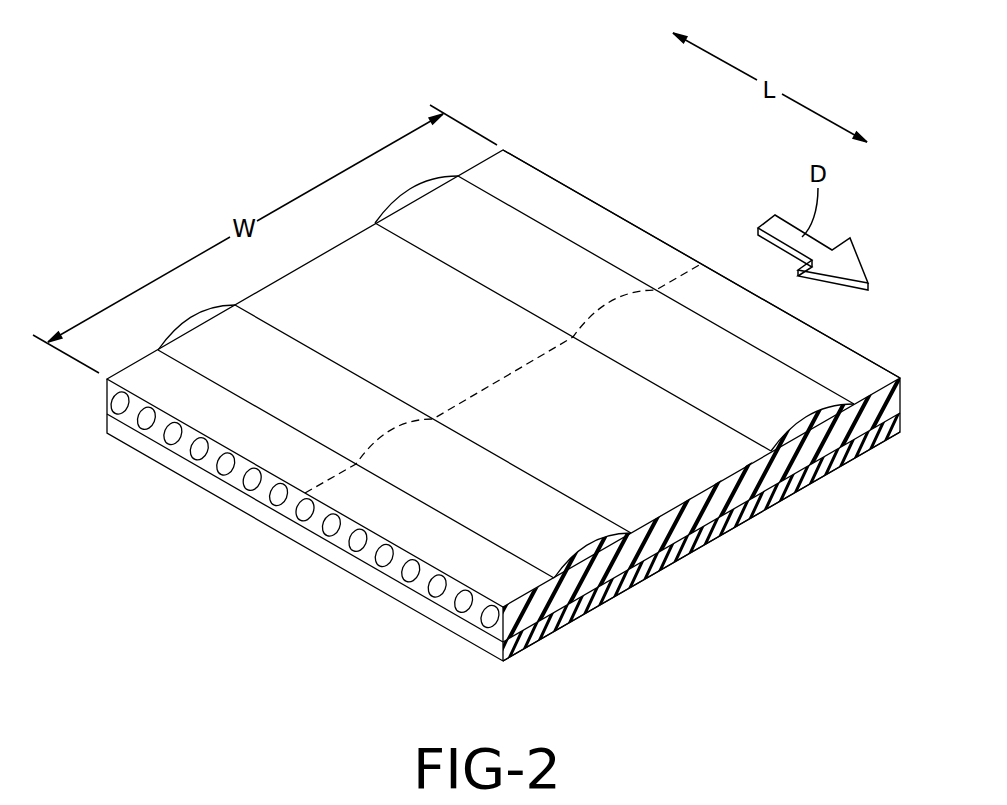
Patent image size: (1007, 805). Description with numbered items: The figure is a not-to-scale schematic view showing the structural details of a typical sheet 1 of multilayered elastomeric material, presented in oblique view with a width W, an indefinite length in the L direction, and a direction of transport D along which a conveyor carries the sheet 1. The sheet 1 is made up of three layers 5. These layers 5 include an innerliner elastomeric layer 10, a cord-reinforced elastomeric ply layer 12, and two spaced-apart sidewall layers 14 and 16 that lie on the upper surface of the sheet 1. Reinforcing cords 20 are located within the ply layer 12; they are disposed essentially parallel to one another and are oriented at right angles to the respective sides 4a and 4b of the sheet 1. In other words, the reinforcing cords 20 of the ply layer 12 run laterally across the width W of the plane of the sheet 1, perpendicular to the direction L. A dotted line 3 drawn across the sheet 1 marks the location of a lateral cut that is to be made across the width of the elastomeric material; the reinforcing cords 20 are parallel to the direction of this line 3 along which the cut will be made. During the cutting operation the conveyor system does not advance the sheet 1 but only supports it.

The sheet 1 is at (310, 123).
The dotted line 3 is at (371, 444).
The side 4a is at (376, 563).
The side 4b is at (597, 202).
The layers 5 is at (752, 538).
The innerliner elastomeric layer 10 is at (627, 582).
The cord-reinforced elastomeric ply layer 12 is at (560, 600).
The sidewall layer 14 is at (243, 375).
The sidewall layer 16 is at (516, 257).
The reinforcing cords 20 is at (333, 527).